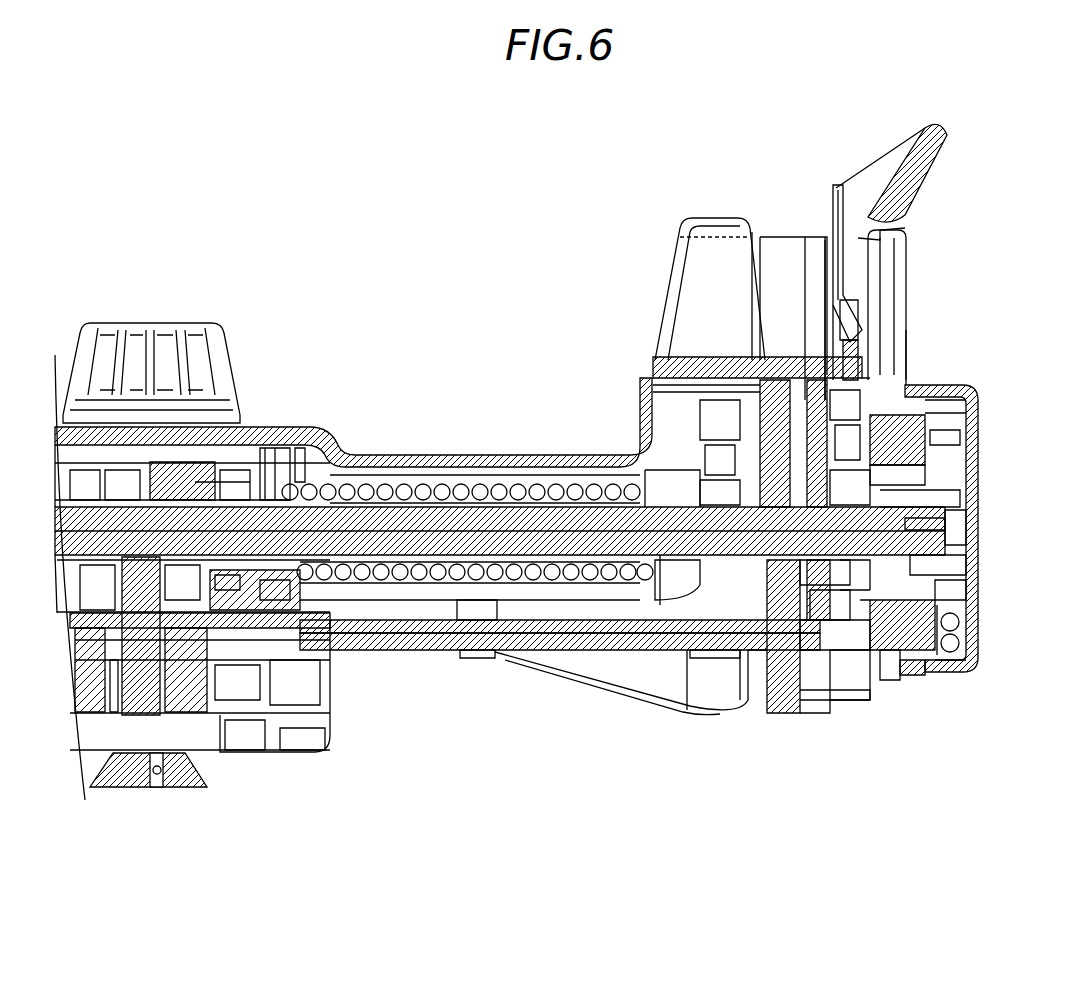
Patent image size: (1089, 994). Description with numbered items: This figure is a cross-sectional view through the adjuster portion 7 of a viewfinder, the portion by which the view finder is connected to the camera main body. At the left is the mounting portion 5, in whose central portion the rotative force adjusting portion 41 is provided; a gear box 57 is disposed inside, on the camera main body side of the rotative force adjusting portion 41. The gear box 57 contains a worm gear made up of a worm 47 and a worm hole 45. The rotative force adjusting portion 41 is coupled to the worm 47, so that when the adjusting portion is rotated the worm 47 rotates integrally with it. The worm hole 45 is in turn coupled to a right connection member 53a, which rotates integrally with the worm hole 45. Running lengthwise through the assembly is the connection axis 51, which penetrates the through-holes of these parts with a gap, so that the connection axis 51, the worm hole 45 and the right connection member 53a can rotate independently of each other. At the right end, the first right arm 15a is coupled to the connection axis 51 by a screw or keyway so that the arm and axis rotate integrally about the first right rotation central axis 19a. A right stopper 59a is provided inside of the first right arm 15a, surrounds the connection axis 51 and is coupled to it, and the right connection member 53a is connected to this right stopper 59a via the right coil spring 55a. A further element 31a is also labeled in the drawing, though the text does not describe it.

The mounting portion 5 is at (581, 448).
The adjuster portion 7 is at (332, 754).
The first right arm 15a is at (983, 607).
The first right rotation central axis 19a is at (988, 527).
The lock portion 31a is at (937, 680).
The rotative force adjusting portion 41 is at (153, 385).
The worm hole 45 is at (160, 790).
The worm 47 is at (188, 462).
The connection axis 51 is at (466, 520).
The right connection member 53a is at (261, 752).
The right coil spring 55a is at (431, 650).
The gear box 57 is at (210, 476).
The right stopper 59a is at (686, 655).